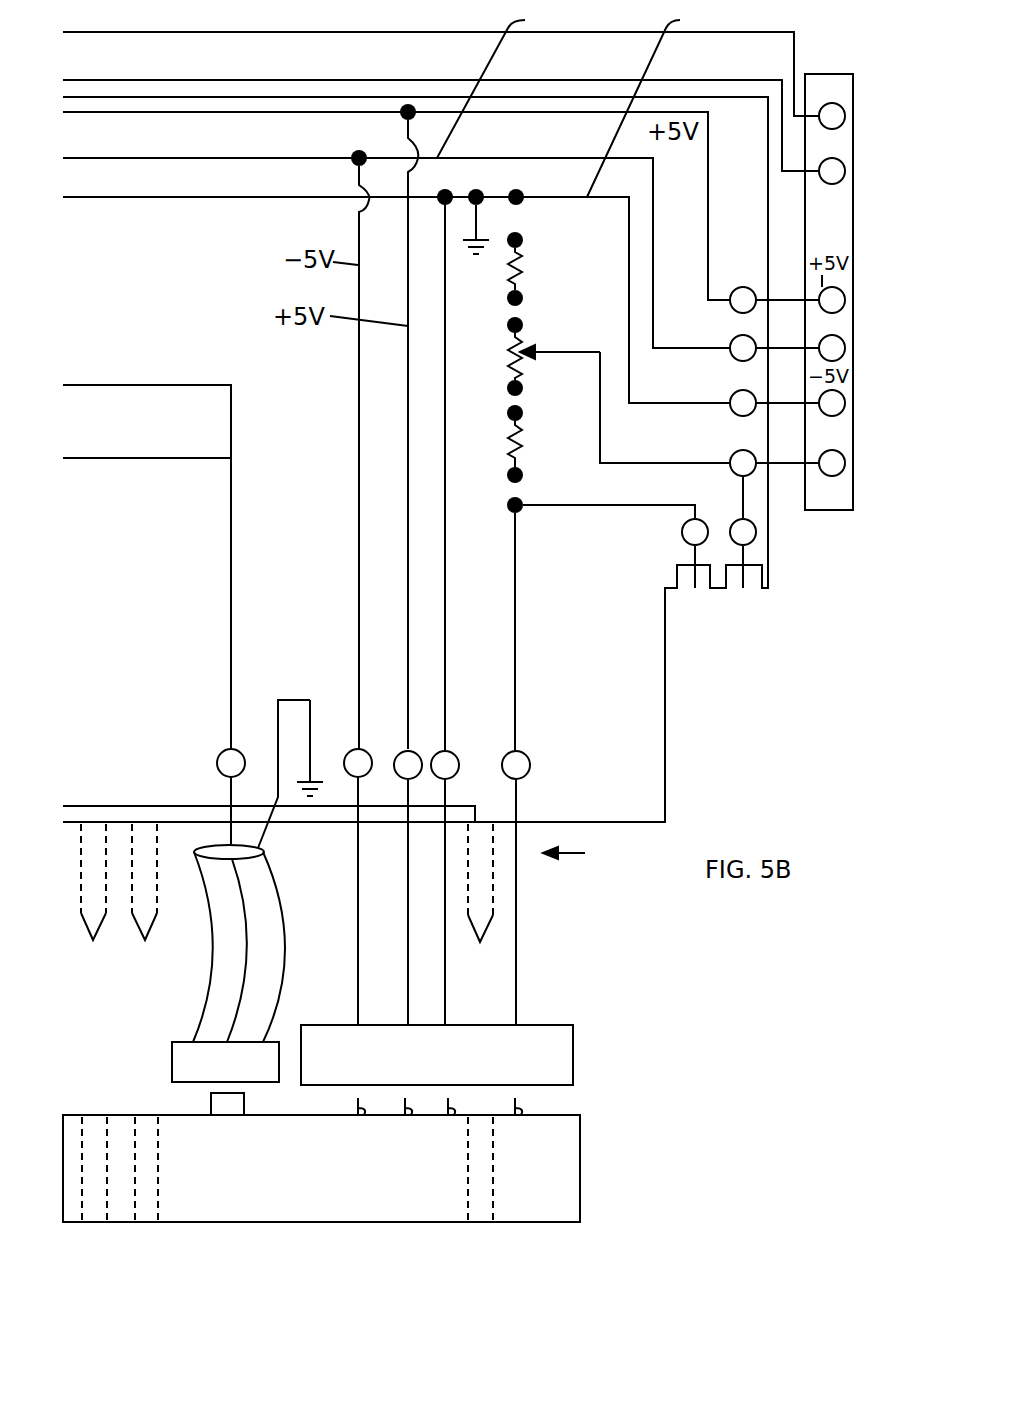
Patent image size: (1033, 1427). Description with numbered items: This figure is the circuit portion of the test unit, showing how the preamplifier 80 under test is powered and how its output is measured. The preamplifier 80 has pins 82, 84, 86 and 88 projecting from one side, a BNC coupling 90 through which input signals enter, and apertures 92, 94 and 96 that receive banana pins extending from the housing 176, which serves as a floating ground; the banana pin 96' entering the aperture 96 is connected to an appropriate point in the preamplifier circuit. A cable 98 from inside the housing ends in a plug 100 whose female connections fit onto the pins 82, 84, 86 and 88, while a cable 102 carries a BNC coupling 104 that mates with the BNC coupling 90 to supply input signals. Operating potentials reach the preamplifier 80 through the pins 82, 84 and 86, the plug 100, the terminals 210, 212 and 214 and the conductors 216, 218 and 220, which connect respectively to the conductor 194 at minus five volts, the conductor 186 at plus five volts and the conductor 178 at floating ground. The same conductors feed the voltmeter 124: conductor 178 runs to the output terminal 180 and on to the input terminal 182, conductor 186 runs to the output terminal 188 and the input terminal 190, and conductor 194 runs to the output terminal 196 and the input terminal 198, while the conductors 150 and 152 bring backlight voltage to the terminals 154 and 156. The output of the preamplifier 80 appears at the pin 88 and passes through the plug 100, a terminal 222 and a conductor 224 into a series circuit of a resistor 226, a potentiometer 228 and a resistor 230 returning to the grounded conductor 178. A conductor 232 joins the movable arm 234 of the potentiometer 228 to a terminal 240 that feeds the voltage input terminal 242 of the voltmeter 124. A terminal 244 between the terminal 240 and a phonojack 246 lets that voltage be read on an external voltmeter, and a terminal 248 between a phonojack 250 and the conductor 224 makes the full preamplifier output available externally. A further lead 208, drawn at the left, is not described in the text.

The conductor 150 is at (292, 32).
The conductor 152 is at (348, 80).
The conductor 186 is at (190, 112).
The conductor 194 is at (509, 82).
The conductor 178 is at (656, 101).
The terminal 154 is at (818, 105).
The voltmeter 124 is at (845, 118).
The terminal 156 is at (845, 172).
The output terminal 188 is at (750, 288).
The output terminal 196 is at (735, 338).
The output terminal 180 is at (740, 390).
The input terminal 190 is at (846, 300).
The input terminal 198 is at (846, 348).
The input terminal 182 is at (846, 403).
The voltage input terminal 242 is at (846, 463).
The terminal 240 is at (745, 450).
The conductor 232 is at (663, 461).
The movable arm 234 is at (600, 352).
The potentiometer 228 is at (532, 332).
The resistor 230 is at (518, 262).
The resistor 226 is at (518, 448).
The conductor 218 is at (408, 428).
The conductor 216 is at (358, 482).
The conductor 220 is at (446, 568).
The conductor 224 is at (516, 645).
The conductor 208 is at (232, 557).
The terminal 210 is at (360, 748).
The terminal 212 is at (410, 752).
The terminal 214 is at (445, 752).
The terminal 222 is at (518, 755).
The housing 176 is at (190, 820).
The terminal 248 is at (682, 532).
The terminal 244 is at (756, 530).
The phonojack 250 is at (712, 577).
The phonojack 246 is at (755, 577).
The aperture 92 is at (93, 940).
The aperture 94 is at (158, 913).
The cable 102 is at (265, 872).
The BNC coupling 104 is at (270, 1042).
The plug 100 is at (557, 1023).
The banana pin 96' is at (520, 883).
The cable 98 is at (580, 855).
The preamplifier 80 is at (581, 1150).
The aperture 96 is at (318, 1190).
The BNC coupling 90 is at (226, 1115).
The pin 82 is at (358, 1116).
The pin 84 is at (408, 1116).
The pin 86 is at (450, 1116).
The pin 88 is at (518, 1116).